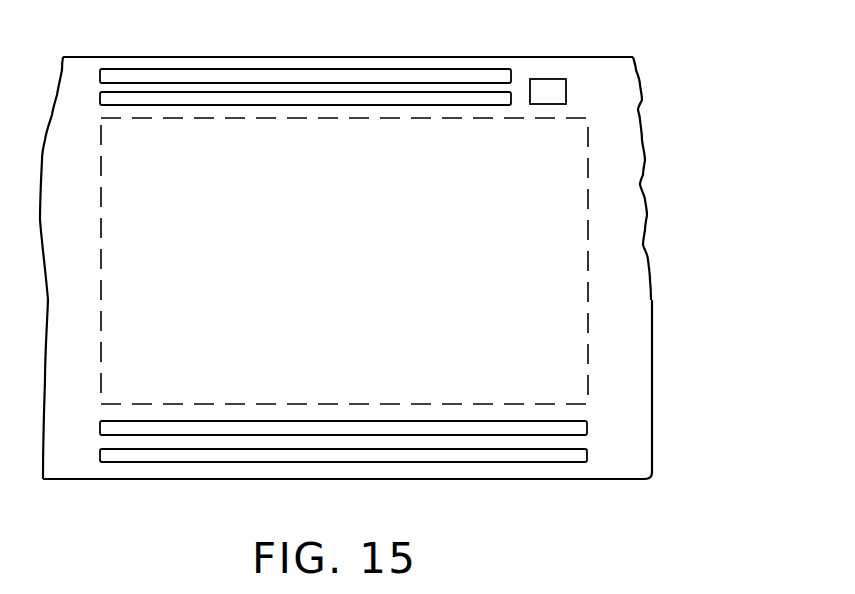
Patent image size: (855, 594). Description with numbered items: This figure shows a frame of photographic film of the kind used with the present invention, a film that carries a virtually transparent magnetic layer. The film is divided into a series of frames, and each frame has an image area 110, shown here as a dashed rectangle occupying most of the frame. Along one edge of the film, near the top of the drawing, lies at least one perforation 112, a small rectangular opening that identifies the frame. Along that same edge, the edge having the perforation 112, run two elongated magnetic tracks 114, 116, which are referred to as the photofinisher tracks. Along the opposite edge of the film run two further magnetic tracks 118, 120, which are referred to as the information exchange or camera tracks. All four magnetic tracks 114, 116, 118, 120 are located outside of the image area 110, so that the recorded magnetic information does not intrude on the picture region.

The image area 110 is at (588, 228).
The perforation 112 is at (551, 88).
The magnetic track 114 is at (478, 75).
The magnetic track 116 is at (483, 100).
The magnetic track 118 is at (587, 428).
The magnetic track 120 is at (577, 456).